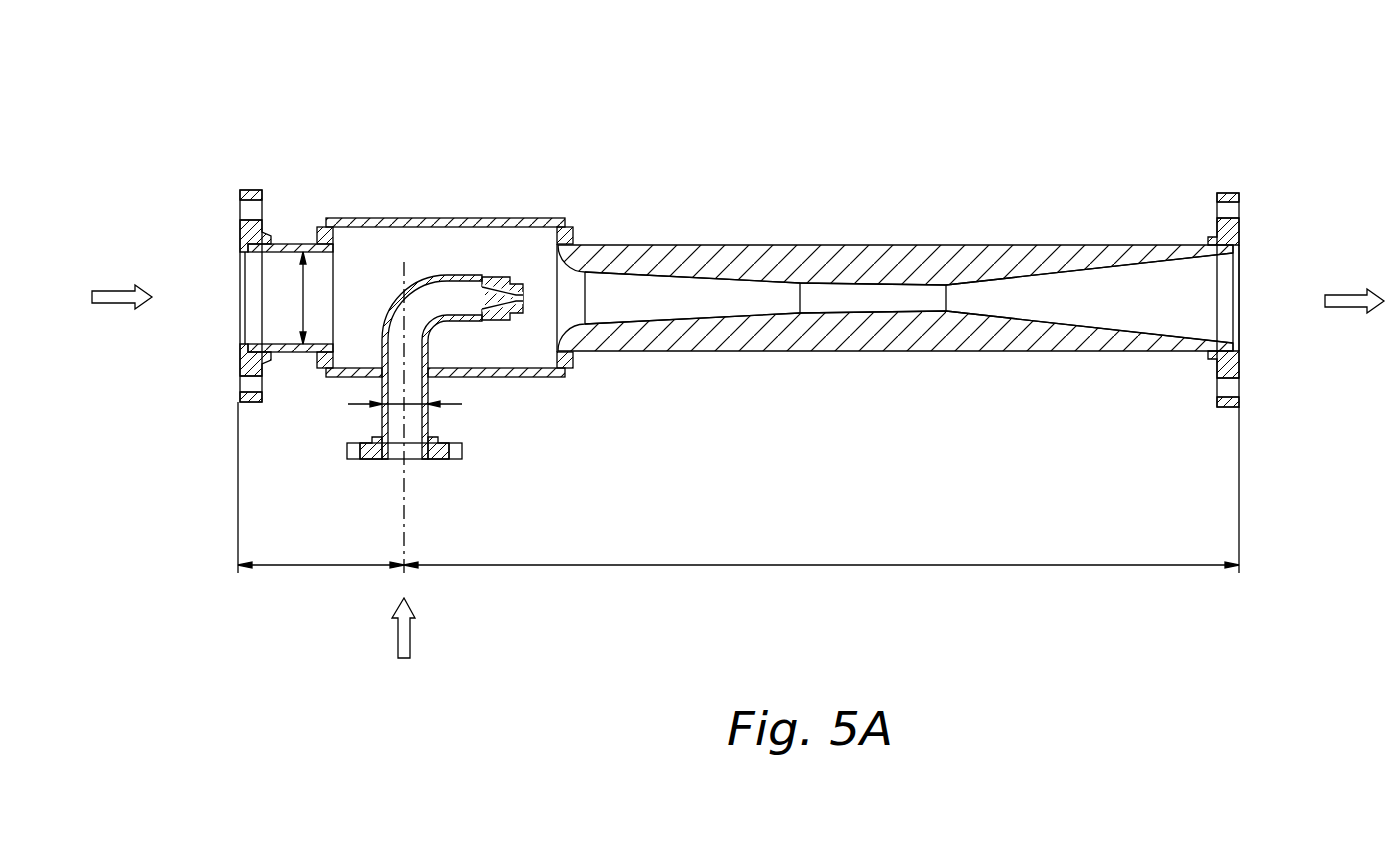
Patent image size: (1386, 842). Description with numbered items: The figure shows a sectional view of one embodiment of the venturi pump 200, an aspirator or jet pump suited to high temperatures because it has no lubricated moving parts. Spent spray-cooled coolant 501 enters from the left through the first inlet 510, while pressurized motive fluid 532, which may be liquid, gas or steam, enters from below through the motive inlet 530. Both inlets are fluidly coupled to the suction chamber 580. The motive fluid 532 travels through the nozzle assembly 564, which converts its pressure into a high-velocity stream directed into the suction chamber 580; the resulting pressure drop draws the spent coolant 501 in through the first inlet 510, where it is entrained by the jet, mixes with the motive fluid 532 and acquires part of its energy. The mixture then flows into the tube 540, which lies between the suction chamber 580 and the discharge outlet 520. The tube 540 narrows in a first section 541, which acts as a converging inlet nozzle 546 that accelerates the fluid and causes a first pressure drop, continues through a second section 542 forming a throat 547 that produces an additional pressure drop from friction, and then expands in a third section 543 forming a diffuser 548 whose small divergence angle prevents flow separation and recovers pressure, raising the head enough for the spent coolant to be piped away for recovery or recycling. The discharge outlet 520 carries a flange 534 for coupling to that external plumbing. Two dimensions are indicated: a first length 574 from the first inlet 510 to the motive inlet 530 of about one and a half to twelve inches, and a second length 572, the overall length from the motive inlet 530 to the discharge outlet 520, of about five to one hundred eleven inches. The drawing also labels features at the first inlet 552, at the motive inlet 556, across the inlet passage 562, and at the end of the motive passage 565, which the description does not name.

The venturi pump 200 is at (1042, 73).
The spent spray-cooled coolant 501 is at (112, 289).
The first inlet 510 is at (240, 258).
The discharge outlet 520 is at (1242, 334).
The motive inlet 530 is at (420, 460).
The motive fluid 532 is at (410, 638).
The flange 534 is at (1230, 193).
The tube 540 is at (817, 228).
The first section 541 is at (712, 262).
The second section 542 is at (905, 270).
The third section 543 is at (1080, 255).
The converging inlet nozzle 546 is at (734, 305).
The throat 547 is at (883, 305).
The diffuser 548 is at (842, 293).
The inlet flange 552 is at (252, 190).
The injection pipe flange 556 is at (462, 452).
The inlet diameter 562 is at (318, 282).
The nozzle assembly 564 is at (380, 413).
The nozzle 565 is at (453, 278).
The second length 572 is at (822, 567).
The first length 574 is at (320, 567).
The suction chamber 580 is at (430, 247).